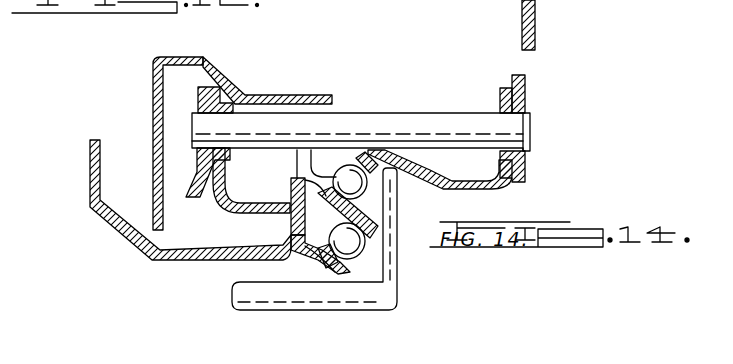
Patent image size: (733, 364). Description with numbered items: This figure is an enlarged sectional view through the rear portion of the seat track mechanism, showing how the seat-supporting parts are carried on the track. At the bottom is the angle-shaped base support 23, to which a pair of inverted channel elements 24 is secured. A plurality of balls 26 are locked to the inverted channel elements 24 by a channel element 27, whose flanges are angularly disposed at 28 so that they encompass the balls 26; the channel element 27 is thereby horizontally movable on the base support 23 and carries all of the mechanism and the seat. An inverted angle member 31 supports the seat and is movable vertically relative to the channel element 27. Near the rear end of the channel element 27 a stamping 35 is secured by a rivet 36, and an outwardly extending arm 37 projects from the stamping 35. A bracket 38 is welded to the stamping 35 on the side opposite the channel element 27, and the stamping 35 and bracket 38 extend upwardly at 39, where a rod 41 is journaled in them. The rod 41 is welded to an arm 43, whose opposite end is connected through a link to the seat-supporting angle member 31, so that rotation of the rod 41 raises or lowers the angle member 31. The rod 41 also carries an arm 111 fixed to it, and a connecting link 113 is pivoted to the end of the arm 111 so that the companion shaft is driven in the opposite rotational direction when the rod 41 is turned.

The base support 23 is at (392, 276).
The inverted channel elements 24 is at (367, 209).
The balls 26 is at (337, 172).
The channel element 27 is at (313, 250).
The angularly disposed flanges 28 is at (347, 167).
The inverted angle member 31 is at (153, 97).
The stamping 35 is at (458, 187).
The rivet 36 is at (312, 212).
The outwardly extending arm 37 is at (124, 240).
The bracket 38 is at (273, 173).
The upwardly extending portions 39 is at (222, 82).
The rod 41 is at (452, 88).
The arm 43 is at (197, 98).
The arm 111 is at (525, 79).
The connecting link 113 is at (537, 10).